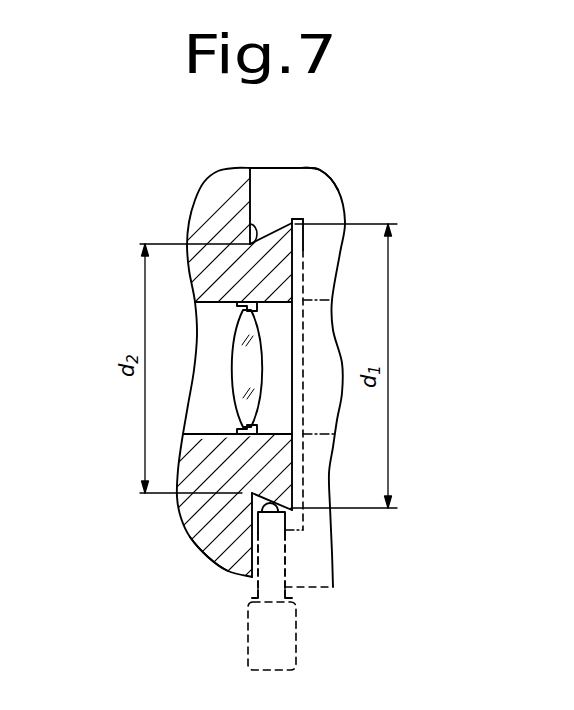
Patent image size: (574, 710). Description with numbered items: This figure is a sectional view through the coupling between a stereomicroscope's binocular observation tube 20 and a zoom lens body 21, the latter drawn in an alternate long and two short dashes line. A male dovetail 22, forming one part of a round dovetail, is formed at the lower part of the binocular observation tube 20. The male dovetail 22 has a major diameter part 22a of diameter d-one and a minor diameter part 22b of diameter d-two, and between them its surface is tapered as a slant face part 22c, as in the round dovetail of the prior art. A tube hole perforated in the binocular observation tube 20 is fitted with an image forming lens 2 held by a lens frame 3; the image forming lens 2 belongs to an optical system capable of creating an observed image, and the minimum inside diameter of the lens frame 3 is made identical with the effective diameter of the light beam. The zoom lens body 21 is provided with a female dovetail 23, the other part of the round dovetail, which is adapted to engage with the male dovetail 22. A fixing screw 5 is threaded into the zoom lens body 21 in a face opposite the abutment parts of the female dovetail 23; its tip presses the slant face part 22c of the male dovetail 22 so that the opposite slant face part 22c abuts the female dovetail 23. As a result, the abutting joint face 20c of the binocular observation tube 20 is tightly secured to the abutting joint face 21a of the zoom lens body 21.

The image forming lens 2 is at (240, 375).
The lens frame 3 is at (237, 306).
The fixing screw 5 is at (280, 635).
The binocular observation tube 20 is at (190, 508).
The abutting joint face 20c is at (255, 203).
The zoom lens body 21 is at (326, 589).
The abutting joint face 21a is at (250, 195).
The male dovetail 22 is at (300, 468).
The major diameter part 22a is at (291, 221).
The minor diameter part 22b is at (252, 224).
The slant face part 22c is at (280, 222).
The female dovetail 23 is at (306, 442).